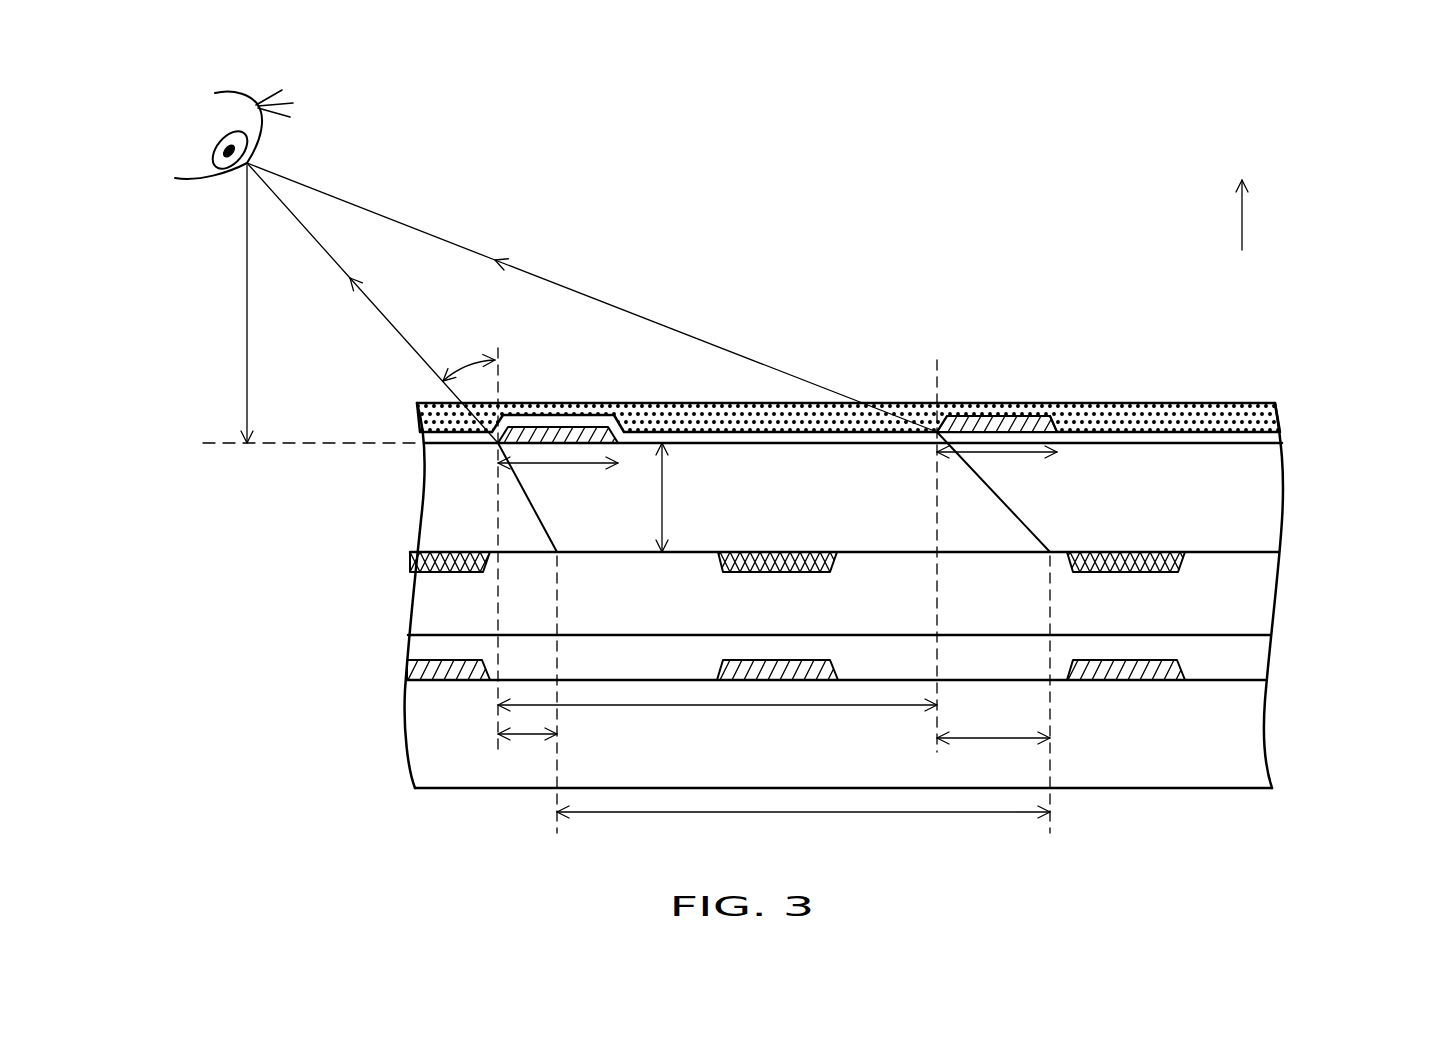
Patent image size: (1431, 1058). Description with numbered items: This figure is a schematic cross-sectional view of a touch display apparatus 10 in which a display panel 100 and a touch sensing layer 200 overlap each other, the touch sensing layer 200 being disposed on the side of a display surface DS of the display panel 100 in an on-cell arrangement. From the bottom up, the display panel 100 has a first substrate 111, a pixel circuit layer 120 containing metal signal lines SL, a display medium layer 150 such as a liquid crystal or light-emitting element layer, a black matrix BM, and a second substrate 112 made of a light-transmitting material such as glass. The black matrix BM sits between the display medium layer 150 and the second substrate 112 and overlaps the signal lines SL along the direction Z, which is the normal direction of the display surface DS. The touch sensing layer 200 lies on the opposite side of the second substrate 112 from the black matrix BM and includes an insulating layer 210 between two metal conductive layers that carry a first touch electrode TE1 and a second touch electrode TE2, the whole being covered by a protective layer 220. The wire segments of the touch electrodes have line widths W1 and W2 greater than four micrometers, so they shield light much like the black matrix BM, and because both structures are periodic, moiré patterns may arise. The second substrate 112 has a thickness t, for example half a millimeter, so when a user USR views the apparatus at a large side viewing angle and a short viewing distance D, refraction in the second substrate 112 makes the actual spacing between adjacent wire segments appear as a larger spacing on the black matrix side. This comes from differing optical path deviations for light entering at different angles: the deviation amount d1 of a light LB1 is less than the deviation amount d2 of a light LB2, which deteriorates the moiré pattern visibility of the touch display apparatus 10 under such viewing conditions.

The touch display apparatus 10 is at (366, 755).
The display panel 100 is at (1365, 443).
The touch sensing layer 200 is at (1365, 403).
The first substrate 111 is at (1264, 737).
The second substrate 112 is at (1271, 500).
The pixel circuit layer 120 is at (1264, 660).
The display medium layer 150 is at (1273, 583).
The insulating layer 210 is at (1276, 437).
The protective layer 220 is at (1279, 417).
The user USR is at (185, 135).
The light LB1 is at (383, 315).
The light LB2 is at (675, 330).
The display surface DS is at (455, 441).
The first touch electrode TE1 is at (572, 434).
The second touch electrode TE2 is at (977, 423).
The black matrix BM is at (1136, 560).
The signal lines SL is at (1132, 672).
The viewing distance D is at (310, 304).
The line width W1 is at (558, 482).
The line width W2 is at (997, 468).
The thickness t is at (669, 497).
The optical path deviation amount d1 is at (527, 753).
The optical path deviation amount d2 is at (993, 755).
The direction Z is at (1242, 198).